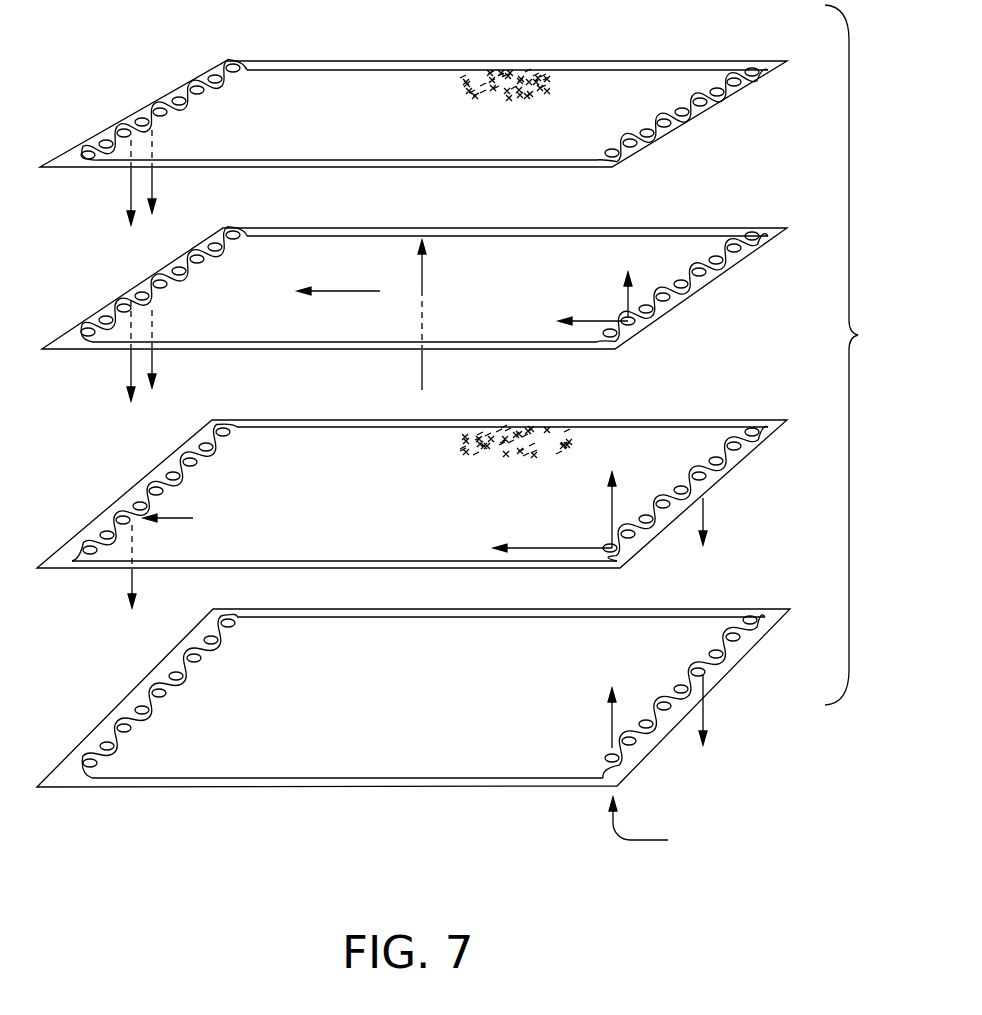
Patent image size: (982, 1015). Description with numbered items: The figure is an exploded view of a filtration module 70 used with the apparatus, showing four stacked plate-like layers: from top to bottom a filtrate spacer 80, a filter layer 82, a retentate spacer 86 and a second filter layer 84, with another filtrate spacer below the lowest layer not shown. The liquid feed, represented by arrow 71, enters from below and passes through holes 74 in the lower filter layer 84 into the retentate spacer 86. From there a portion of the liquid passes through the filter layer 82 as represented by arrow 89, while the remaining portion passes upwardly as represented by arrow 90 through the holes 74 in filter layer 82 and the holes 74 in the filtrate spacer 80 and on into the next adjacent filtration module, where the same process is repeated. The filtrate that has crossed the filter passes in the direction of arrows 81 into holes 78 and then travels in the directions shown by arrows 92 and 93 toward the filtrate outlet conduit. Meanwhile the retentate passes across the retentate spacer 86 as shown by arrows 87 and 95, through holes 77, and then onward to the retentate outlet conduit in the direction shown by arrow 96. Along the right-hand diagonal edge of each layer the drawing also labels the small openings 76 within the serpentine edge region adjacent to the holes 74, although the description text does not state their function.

The filtration module 70 is at (860, 355).
The arrow representing liquid feed 71 is at (632, 840).
The holes 74 is at (724, 90).
The apertures 76 is at (660, 118).
The holes 77 is at (235, 62).
The holes 78 is at (145, 118).
The filtrate spacer 80 is at (425, 130).
The arrows representing filtrate direction 81 is at (342, 290).
The filter layer 82 is at (497, 278).
The filter layer 84 is at (423, 700).
The retentate spacer 86 is at (410, 490).
The arrow representing retentate flow 87 is at (540, 547).
The arrow representing filtrate passage 89 is at (420, 276).
The arrow representing upward liquid flow 90 is at (612, 512).
The arrow representing filtrate direction 92 is at (153, 157).
The arrow representing filtrate direction 93 is at (626, 305).
The arrow representing retentate flow 95 is at (180, 520).
The arrow representing retentate direction 96 is at (128, 586).